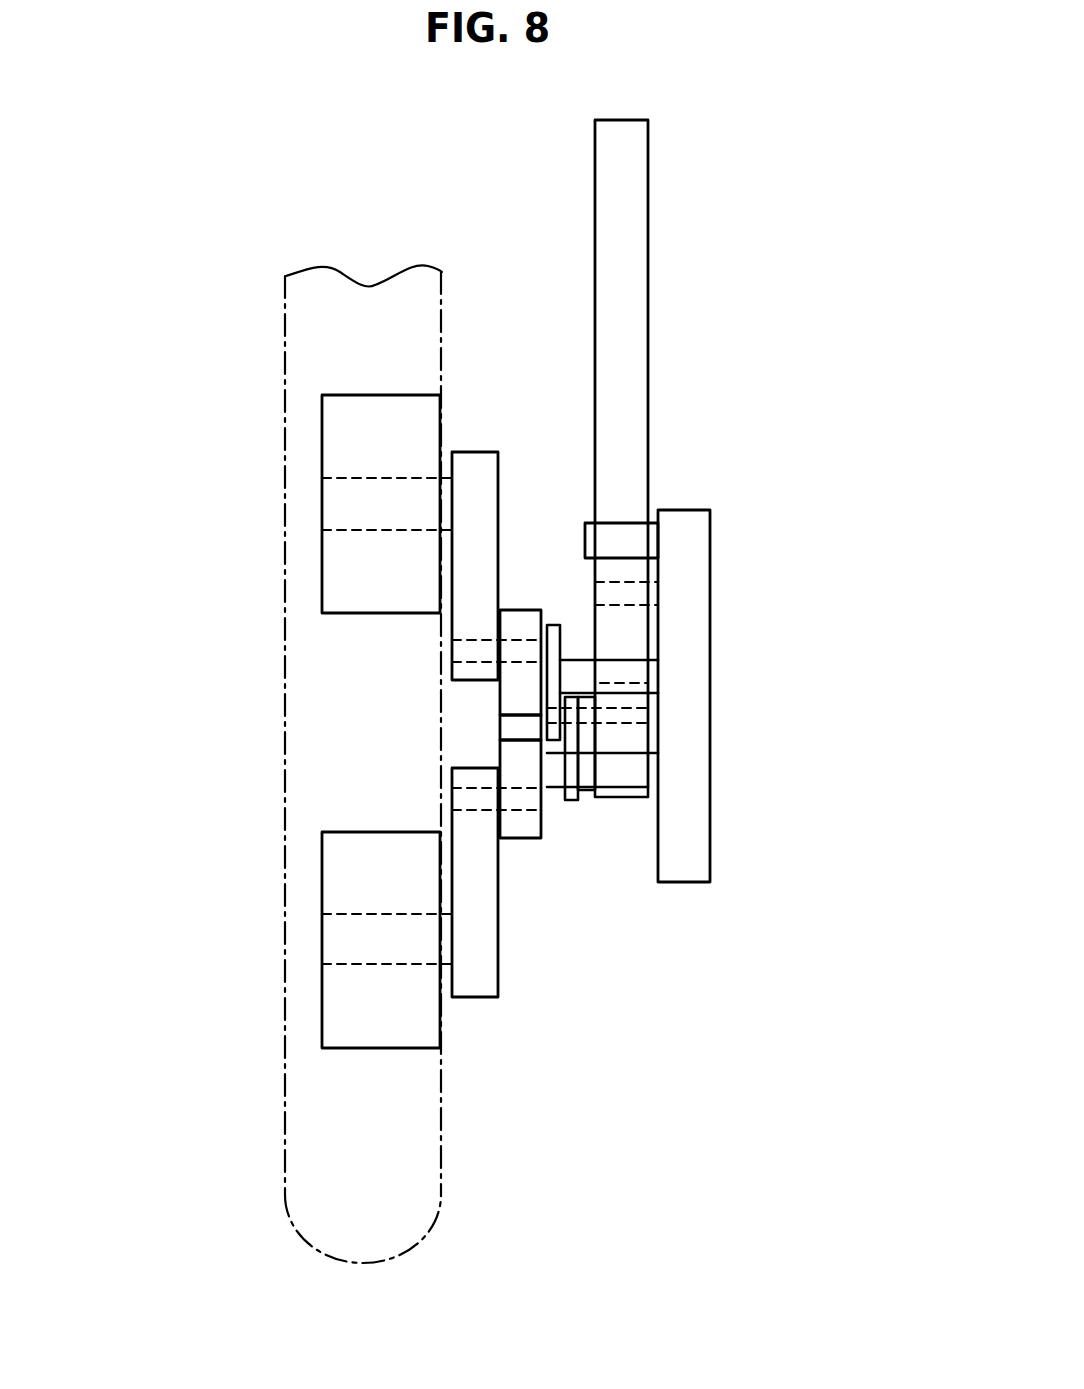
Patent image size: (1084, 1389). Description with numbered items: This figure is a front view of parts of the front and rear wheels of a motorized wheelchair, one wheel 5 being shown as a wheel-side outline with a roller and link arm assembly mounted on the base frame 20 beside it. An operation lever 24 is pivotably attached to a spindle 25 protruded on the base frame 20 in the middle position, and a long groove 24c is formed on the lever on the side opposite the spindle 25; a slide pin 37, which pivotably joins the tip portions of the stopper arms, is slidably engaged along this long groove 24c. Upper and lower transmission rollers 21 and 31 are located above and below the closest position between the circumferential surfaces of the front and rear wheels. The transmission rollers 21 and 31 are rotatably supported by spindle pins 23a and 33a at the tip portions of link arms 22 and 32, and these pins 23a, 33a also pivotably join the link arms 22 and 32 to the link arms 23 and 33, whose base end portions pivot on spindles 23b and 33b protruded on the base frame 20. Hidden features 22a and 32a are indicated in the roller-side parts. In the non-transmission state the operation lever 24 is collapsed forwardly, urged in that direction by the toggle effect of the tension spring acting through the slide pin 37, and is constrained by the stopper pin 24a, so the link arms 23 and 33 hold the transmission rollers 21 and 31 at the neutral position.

The wheel 5 is at (441, 1230).
The base frame 20 is at (712, 540).
The upper transmission roller 21 is at (322, 1013).
The upper link arm 22 is at (470, 997).
The bore of lower plate 22a is at (358, 913).
The lower link arm 23 is at (520, 840).
The spindle pin 23a is at (452, 767).
The spindle 23b is at (628, 797).
The operation lever 24 is at (648, 203).
The stopper pin 24a is at (612, 523).
The long groove 24c is at (633, 685).
The spindle 25 is at (625, 582).
The lower transmission roller 31 is at (348, 395).
The lower link arm 32 is at (477, 452).
The bore of upper plate 32a is at (377, 478).
The lower link arm 33 is at (533, 610).
The spindle pin 33a is at (452, 640).
The spindle 33b is at (620, 660).
The slide pin 37 is at (650, 738).